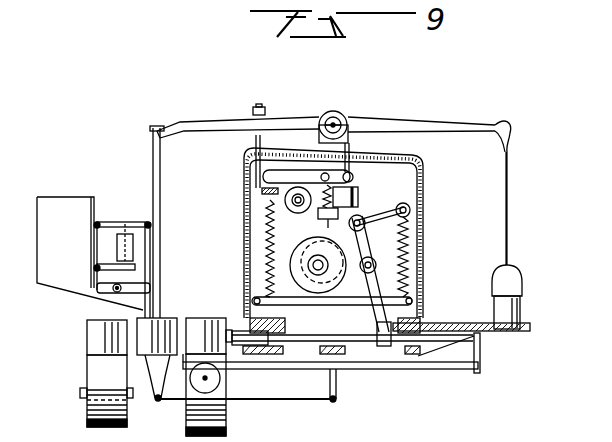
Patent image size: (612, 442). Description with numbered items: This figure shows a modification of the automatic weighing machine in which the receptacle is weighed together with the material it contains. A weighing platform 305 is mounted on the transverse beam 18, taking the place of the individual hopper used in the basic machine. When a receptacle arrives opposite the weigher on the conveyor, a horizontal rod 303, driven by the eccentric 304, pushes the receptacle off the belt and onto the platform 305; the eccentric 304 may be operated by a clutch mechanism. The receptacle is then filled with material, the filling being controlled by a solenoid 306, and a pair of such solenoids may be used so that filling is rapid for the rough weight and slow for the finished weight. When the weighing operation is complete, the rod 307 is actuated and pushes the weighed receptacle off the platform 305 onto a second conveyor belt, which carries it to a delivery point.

The transverse beam 18 is at (226, 104).
The horizontal rod 303 is at (371, 338).
The eccentric 304 is at (337, 242).
The platform 305 is at (137, 400).
The solenoid 306 is at (137, 258).
The rod 307 is at (276, 368).